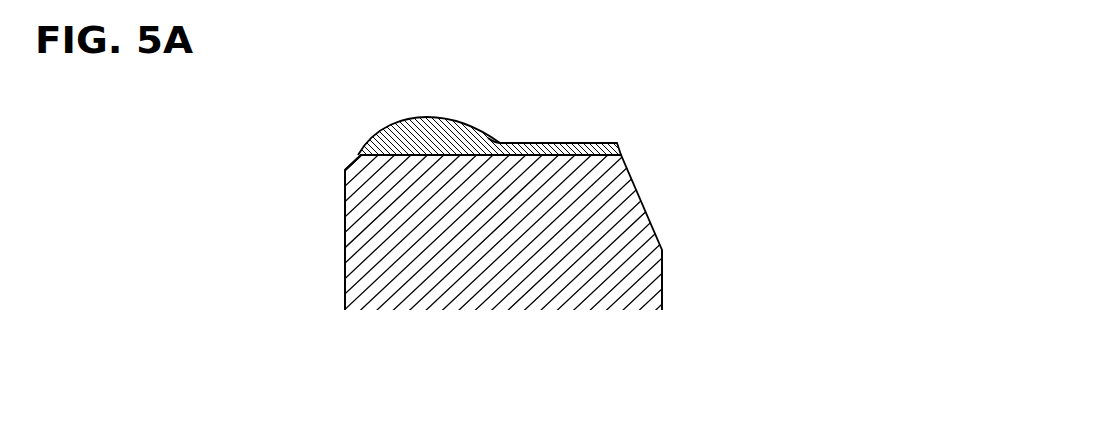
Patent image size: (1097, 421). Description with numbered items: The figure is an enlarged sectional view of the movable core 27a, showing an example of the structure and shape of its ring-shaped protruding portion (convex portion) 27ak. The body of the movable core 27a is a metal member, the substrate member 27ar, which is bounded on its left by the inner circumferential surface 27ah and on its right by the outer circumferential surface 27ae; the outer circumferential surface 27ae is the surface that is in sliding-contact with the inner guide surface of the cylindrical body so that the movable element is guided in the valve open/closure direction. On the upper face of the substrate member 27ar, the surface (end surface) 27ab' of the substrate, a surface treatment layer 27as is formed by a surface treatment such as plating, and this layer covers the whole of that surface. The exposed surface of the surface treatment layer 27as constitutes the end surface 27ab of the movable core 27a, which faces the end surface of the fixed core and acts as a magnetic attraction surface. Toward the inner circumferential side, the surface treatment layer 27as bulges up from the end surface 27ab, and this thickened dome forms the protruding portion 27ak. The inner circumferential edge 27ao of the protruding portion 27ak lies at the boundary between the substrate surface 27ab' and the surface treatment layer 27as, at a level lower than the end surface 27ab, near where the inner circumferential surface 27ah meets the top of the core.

The movable core 27a is at (636, 204).
The metal member (substrate member) 27ar is at (534, 201).
The protruding portion (convex portion) 27ak is at (435, 117).
The end surface 27ab is at (566, 118).
The surface (end surface) of the substrate member 27ab' is at (558, 94).
The surface treatment layer 27as is at (513, 143).
The inner circumferential edge 27ao is at (358, 155).
The inner circumferential surface 27ah is at (345, 238).
The outer circumferential surface 27ae is at (662, 282).